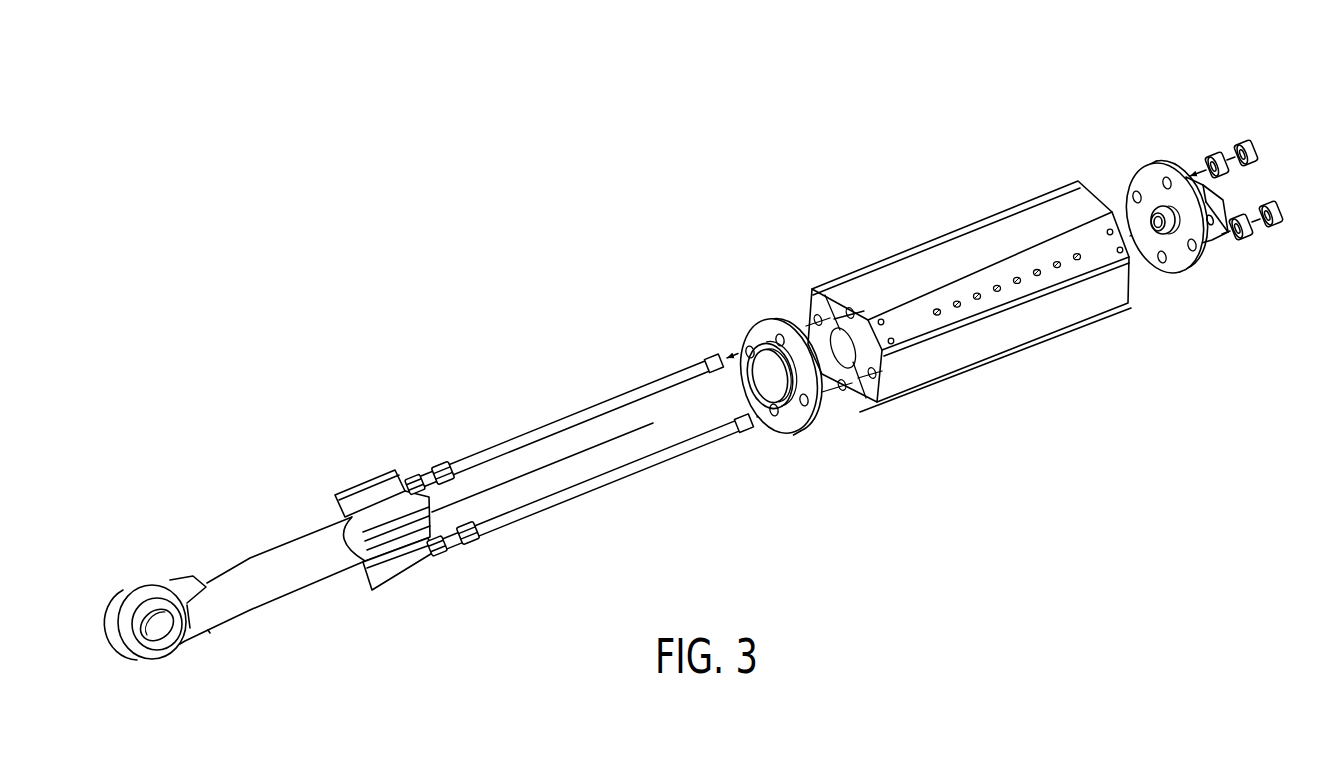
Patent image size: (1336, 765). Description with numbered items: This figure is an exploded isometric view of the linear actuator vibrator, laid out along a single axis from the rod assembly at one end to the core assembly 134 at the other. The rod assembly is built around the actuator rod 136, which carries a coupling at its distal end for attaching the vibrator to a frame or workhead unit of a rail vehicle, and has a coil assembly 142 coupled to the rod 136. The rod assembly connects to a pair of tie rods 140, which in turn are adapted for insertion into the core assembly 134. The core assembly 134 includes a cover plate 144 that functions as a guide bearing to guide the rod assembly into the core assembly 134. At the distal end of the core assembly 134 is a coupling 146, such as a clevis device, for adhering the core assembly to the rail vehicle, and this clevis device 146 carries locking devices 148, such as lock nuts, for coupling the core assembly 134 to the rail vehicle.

The core assembly 134 is at (990, 247).
The actuator rod 136 is at (260, 572).
The tie rods 140 is at (567, 424).
The coil assembly 142 is at (372, 497).
The cover plate 144 is at (762, 337).
The coupling 146 is at (1152, 187).
The locking devices 148 is at (1251, 141).